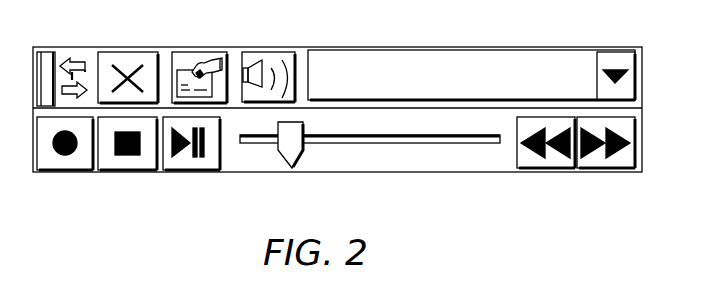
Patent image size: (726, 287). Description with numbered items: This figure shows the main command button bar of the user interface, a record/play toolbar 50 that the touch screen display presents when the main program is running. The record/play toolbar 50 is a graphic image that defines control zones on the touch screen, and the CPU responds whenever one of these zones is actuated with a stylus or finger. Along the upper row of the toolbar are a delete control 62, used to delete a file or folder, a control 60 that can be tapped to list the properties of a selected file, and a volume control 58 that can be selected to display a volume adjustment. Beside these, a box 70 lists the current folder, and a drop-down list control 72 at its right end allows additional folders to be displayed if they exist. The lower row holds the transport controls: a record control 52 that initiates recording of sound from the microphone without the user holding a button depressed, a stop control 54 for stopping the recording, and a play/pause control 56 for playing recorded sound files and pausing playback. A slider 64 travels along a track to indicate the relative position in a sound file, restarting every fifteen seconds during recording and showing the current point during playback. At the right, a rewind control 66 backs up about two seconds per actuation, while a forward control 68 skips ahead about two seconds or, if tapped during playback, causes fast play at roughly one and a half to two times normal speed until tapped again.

The record/play toolbar 50 is at (152, 240).
The record control 52 is at (61, 162).
The stop control 54 is at (122, 162).
The play/pause control 56 is at (183, 162).
The volume control 58 is at (273, 53).
The control 60 is at (197, 53).
The delete control 62 is at (118, 53).
The slider 64 is at (293, 170).
The rewind control 66 is at (542, 170).
The forward control 68 is at (630, 155).
The box 70 is at (478, 57).
The drop-down list control 72 is at (632, 77).